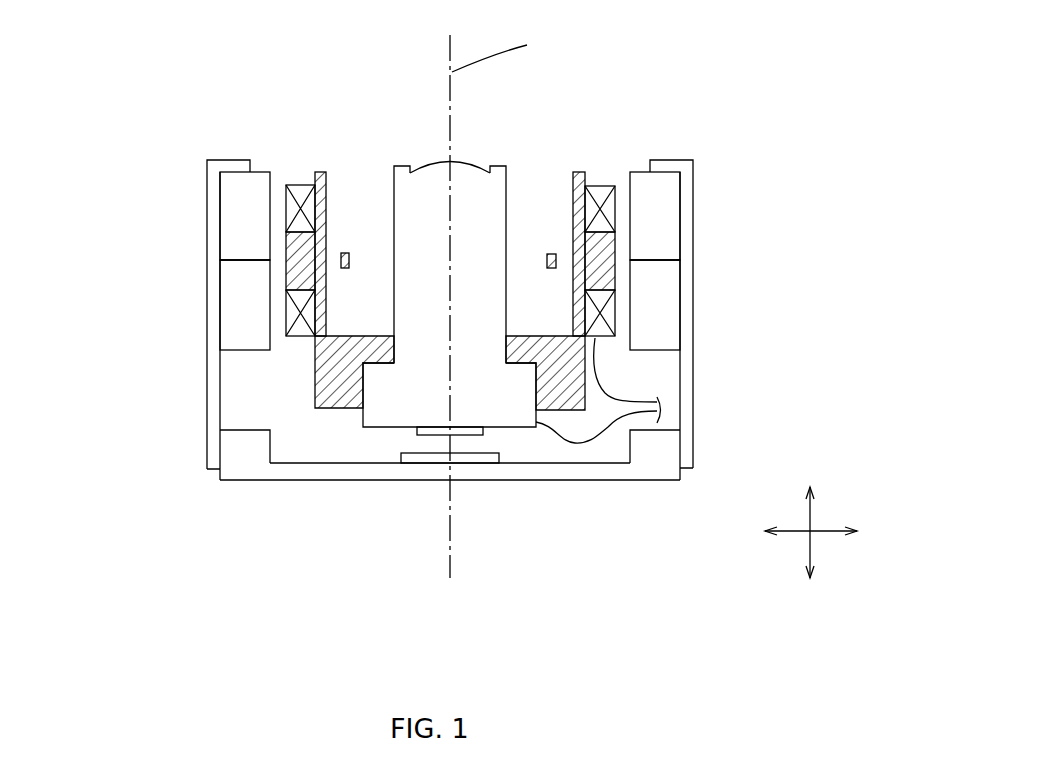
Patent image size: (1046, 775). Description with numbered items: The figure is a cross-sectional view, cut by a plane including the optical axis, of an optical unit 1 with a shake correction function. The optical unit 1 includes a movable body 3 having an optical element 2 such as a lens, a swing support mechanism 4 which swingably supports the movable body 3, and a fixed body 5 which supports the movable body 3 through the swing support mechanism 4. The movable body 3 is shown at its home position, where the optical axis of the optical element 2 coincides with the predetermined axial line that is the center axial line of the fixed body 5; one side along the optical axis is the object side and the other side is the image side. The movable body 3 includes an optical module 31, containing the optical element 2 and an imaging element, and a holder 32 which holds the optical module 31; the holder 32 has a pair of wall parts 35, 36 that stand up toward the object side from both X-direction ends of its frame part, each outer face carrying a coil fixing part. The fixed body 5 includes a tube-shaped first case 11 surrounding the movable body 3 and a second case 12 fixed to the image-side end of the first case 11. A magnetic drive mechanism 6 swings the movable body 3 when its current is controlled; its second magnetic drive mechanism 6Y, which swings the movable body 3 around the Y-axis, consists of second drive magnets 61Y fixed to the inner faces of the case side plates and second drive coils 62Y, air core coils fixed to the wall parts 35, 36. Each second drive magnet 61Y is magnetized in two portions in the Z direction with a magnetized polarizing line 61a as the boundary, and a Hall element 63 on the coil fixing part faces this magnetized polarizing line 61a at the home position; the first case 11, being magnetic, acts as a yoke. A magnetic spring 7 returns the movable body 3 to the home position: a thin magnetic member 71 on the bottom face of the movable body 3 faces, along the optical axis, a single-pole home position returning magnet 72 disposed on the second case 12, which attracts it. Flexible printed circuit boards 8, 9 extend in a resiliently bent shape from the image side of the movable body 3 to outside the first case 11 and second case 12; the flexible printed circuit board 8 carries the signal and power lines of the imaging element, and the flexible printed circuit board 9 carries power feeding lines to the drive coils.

The optical unit with a shake correction function 1 is at (135, 75).
The optical element 2 is at (466, 165).
The movable body 3 is at (414, 151).
The swing support mechanism 4 is at (448, 260).
The fixed body 5 is at (700, 168).
The magnetic drive mechanism 6 is at (85, 195).
The second magnetic drive mechanism 6Y is at (452, 261).
The second drive magnet 61Y is at (233, 223).
The magnetized polarizing line 61a is at (233, 270).
The second drive coil 62Y is at (300, 318).
The Hall element 63 is at (345, 252).
The magnetic spring 7 is at (422, 527).
The magnetic member 71 is at (413, 432).
The home position returning magnet 72 is at (421, 458).
The flexible printed circuit board 8 is at (565, 435).
The flexible printed circuit board 9 is at (618, 423).
The first case 11 is at (693, 390).
The second case 12 is at (617, 470).
The optical module 31 is at (507, 208).
The holder 32 is at (520, 335).
The wall part 35 is at (580, 172).
The wall part 36 is at (322, 171).